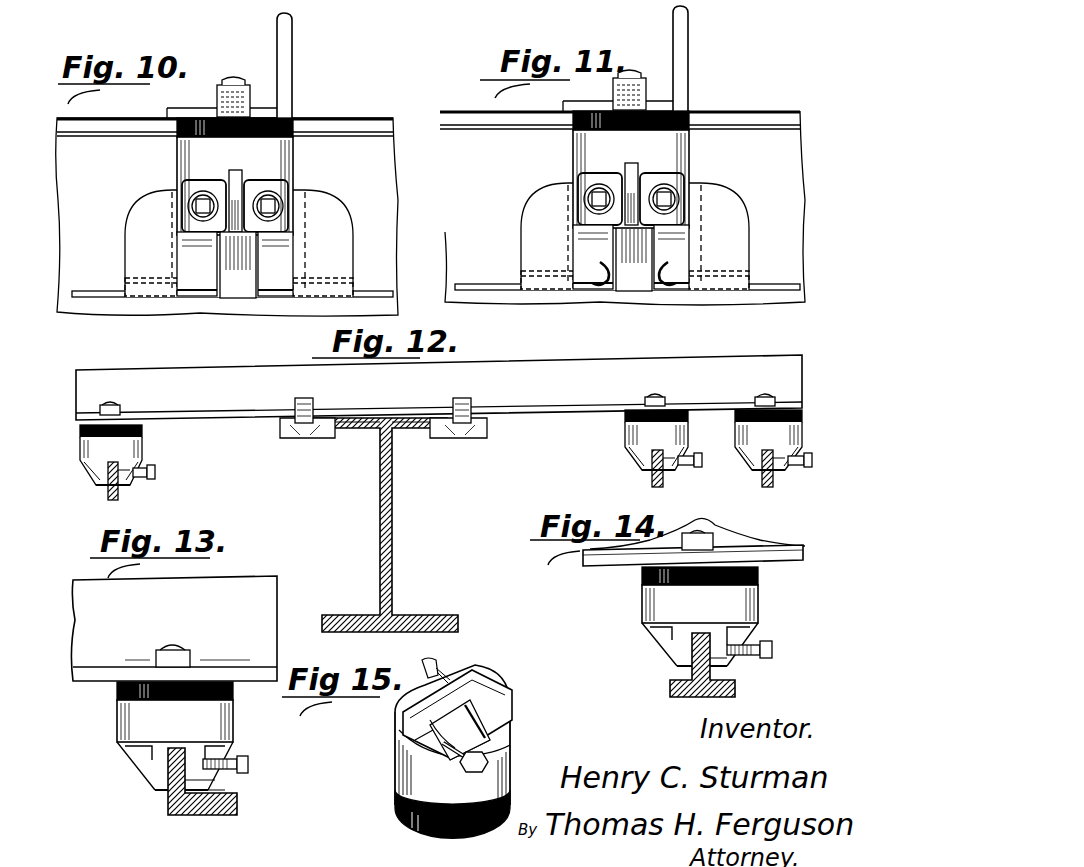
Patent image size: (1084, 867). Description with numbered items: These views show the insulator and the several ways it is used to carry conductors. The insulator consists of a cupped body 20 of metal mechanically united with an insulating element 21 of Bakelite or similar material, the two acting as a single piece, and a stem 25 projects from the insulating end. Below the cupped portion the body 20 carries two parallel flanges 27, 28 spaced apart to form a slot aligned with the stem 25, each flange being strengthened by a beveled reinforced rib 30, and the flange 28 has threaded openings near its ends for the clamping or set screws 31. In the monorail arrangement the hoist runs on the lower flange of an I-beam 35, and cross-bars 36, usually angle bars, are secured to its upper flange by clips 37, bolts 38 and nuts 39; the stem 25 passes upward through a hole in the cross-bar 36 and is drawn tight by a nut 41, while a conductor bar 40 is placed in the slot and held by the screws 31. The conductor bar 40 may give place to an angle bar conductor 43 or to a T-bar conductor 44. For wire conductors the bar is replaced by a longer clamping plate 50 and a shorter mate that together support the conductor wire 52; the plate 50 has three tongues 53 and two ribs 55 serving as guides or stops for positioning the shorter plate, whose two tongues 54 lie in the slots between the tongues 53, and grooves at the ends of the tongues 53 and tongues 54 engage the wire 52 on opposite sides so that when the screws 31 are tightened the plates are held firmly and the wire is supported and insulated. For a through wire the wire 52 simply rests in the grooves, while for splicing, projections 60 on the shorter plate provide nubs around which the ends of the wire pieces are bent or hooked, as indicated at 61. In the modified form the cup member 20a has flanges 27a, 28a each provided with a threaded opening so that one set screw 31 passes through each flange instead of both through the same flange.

In FIG. 10, the cupped body 20 is at (177, 160).
In FIG. 11, the cupped body 20 is at (573, 145).
In FIG. 12, the cupped body 20 is at (82, 458).
In FIG. 13, the cupped body 20 is at (117, 722).
In FIG. 14, the cupped body 20 is at (760, 605).
In FIG. 15, the cup member 20a is at (398, 782).
In FIG. 10, the insulating element 21 is at (293, 127).
In FIG. 11, the insulating element 21 is at (689, 118).
In FIG. 12, the insulating element 21 is at (80, 432).
In FIG. 13, the insulating element 21 is at (117, 693).
In FIG. 14, the insulating element 21 is at (758, 578).
In FIG. 15, the insulating element 21 is at (415, 828).
In FIG. 10, the stem 25 is at (234, 85).
In FIG. 11, the stem 25 is at (630, 78).
In FIG. 12, the stem 25 is at (100, 404).
In FIG. 13, the stem 25 is at (172, 648).
In FIG. 14, the stem 25 is at (700, 533).
In FIG. 12, the flange 27 is at (97, 485).
In FIG. 13, the flange 27 is at (152, 790).
In FIG. 14, the flange 27 is at (677, 668).
In FIG. 15, the modified flange 27a is at (472, 676).
In FIG. 12, the flange 28 is at (128, 482).
In FIG. 13, the flange 28 is at (225, 787).
In FIG. 14, the flange 28 is at (735, 667).
In FIG. 15, the modified flange 28a is at (510, 692).
In FIG. 10, the beveled reinforced rib 30 is at (232, 190).
In FIG. 11, the beveled reinforced rib 30 is at (629, 180).
In FIG. 12, the beveled reinforced rib 30 is at (92, 470).
In FIG. 13, the beveled reinforced rib 30 is at (140, 757).
In FIG. 14, the beveled reinforced rib 30 is at (655, 640).
In FIG. 15, the beveled reinforced rib 30 is at (500, 768).
In FIG. 10, the set screw 31 is at (200, 206).
In FIG. 11, the set screw 31 is at (598, 200).
In FIG. 12, the set screw 31 is at (155, 471).
In FIG. 13, the set screw 31 is at (236, 760).
In FIG. 14, the set screw 31 is at (772, 647).
In FIG. 15, the set screw 31 is at (422, 662).
In FIG. 10, the I-beam 35 is at (390, 263).
In FIG. 11, the I-beam 35 is at (790, 186).
In FIG. 12, the I-beam 35 is at (380, 580).
In FIG. 10, the cross-bar 36 is at (293, 62).
In FIG. 11, the cross-bar 36 is at (690, 58).
In FIG. 12, the cross-bar 36 is at (190, 420).
In FIG. 13, the cross-bar 36 is at (272, 620).
In FIG. 14, the cross-bar 36 is at (583, 556).
In FIG. 12, the clip 37 is at (328, 438).
In FIG. 12, the bolt 38 is at (292, 438).
In FIG. 12, the nut 39 is at (298, 400).
In FIG. 12, the conductor bar 40 is at (112, 500).
In FIG. 10, the nut 41 is at (217, 92).
In FIG. 11, the nut 41 is at (613, 84).
In FIG. 12, the nut 41 is at (120, 406).
In FIG. 13, the angle bar conductor 43 is at (176, 815).
In FIG. 14, the T-bar conductor 44 is at (670, 696).
In FIG. 10, the clamping plate 50 is at (335, 206).
In FIG. 11, the clamping plate 50 is at (548, 190).
In FIG. 10, the conductor wire 52 is at (100, 298).
In FIG. 11, the conductor wire 52 is at (497, 291).
In FIG. 10, the tongue 53 is at (140, 282).
In FIG. 11, the tongue 53 is at (530, 270).
In FIG. 10, the tongue 54 is at (190, 246).
In FIG. 11, the tongue 54 is at (585, 232).
In FIG. 10, the rib 55 is at (335, 273).
In FIG. 10, the projection 60 is at (195, 288).
In FIG. 11, the projection 60 is at (585, 279).
In FIG. 11, the hooked wire end 61 is at (608, 284).